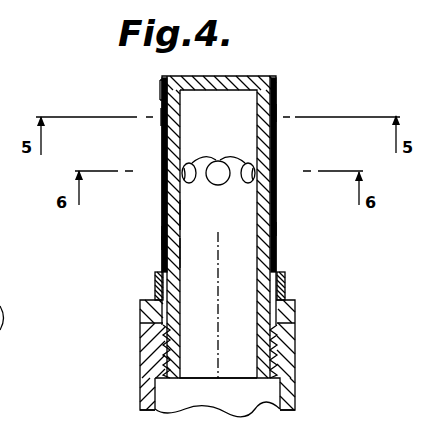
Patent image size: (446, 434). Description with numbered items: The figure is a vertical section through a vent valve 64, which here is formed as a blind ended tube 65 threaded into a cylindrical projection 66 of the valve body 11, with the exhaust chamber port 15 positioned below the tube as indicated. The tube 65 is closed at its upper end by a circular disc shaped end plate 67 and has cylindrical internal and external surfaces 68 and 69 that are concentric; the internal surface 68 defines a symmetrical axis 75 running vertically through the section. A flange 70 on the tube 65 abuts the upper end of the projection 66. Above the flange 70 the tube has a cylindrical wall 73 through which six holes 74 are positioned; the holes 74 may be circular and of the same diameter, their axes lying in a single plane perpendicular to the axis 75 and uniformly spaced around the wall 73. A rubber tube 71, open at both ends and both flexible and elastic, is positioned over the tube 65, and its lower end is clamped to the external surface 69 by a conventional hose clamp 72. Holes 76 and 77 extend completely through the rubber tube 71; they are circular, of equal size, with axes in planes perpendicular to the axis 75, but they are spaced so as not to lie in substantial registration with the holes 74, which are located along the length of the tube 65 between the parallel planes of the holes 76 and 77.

The valve body 11 is at (298, 390).
The exhaust chamber port 15 is at (161, 391).
The vent valve 64 is at (306, 74).
The blind ended tube 65 is at (229, 75).
The cylindrical projection 66 is at (296, 352).
The end plate 67 is at (192, 96).
The internal surface 68 is at (181, 250).
The external surface 69 is at (165, 240).
The flange 70 is at (296, 313).
The rubber tube 71 is at (158, 92).
The hose clamp 72 is at (284, 288).
The cylindrical wall 73 is at (181, 213).
The holes 74 is at (228, 146).
The symmetrical axis 75 is at (219, 342).
The holes 76 is at (279, 106).
The holes 77 is at (277, 228).